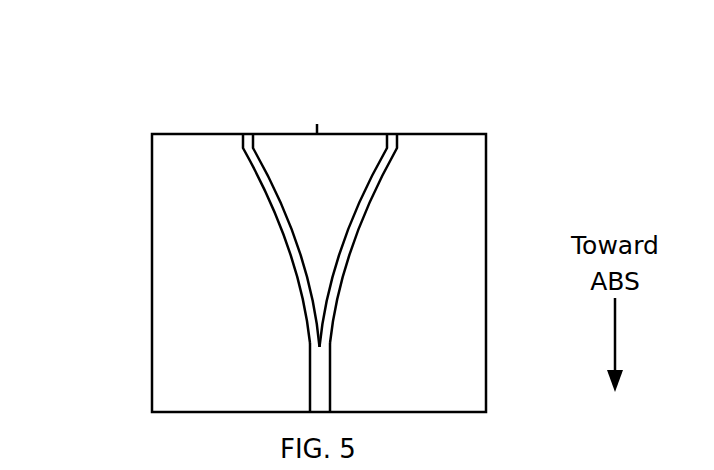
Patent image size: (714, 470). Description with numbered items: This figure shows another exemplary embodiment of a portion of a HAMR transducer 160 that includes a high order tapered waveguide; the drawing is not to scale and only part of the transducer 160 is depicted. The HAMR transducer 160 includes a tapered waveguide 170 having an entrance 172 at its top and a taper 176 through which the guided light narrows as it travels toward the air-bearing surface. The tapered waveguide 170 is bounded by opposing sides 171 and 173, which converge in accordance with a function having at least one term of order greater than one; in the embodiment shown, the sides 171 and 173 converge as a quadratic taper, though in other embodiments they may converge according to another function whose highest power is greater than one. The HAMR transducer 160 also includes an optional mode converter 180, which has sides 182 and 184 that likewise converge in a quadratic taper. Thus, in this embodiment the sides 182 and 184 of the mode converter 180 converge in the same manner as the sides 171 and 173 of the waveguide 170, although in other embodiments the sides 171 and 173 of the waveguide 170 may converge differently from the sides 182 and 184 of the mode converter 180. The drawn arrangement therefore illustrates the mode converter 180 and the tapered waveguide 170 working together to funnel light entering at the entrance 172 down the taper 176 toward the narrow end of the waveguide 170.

The HAMR transducer 160 is at (342, 36).
The tapered waveguide 170 is at (330, 374).
The side 171 is at (276, 263).
The entrance 172 is at (299, 106).
The side 173 is at (373, 263).
The taper 176 is at (190, 337).
The mode converter 180 is at (317, 133).
The side 182 is at (358, 152).
The side 184 is at (278, 152).